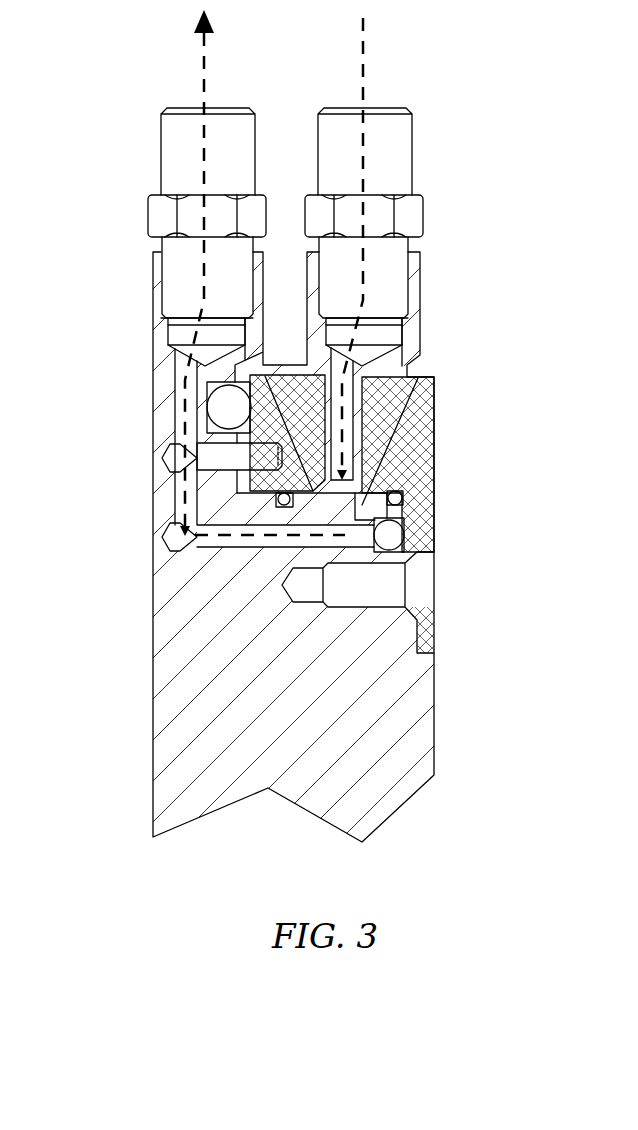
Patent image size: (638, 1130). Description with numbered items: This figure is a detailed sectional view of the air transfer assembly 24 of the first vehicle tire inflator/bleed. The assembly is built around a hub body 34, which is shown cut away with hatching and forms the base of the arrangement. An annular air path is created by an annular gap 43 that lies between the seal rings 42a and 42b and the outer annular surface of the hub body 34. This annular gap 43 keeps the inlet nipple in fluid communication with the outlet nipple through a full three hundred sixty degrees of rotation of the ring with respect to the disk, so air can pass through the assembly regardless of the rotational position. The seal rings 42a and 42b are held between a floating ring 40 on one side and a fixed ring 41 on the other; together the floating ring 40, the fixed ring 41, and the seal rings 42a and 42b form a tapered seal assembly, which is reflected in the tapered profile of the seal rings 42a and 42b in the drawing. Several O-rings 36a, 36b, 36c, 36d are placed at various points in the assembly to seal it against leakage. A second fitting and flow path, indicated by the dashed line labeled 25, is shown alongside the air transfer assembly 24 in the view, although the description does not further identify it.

The air transfer assembly 24 is at (128, 200).
The second fluid connector 25 is at (367, 63).
The hub body 34 is at (188, 692).
The O-ring 36a is at (223, 413).
The O-ring 36b is at (247, 496).
The O-ring 36c is at (403, 499).
The O-ring 36d is at (403, 543).
The floating ring 40 is at (267, 407).
The fixed ring 41 is at (420, 438).
The seal ring 42a is at (310, 405).
The seal ring 42b is at (382, 415).
The annular gap 43 is at (360, 492).